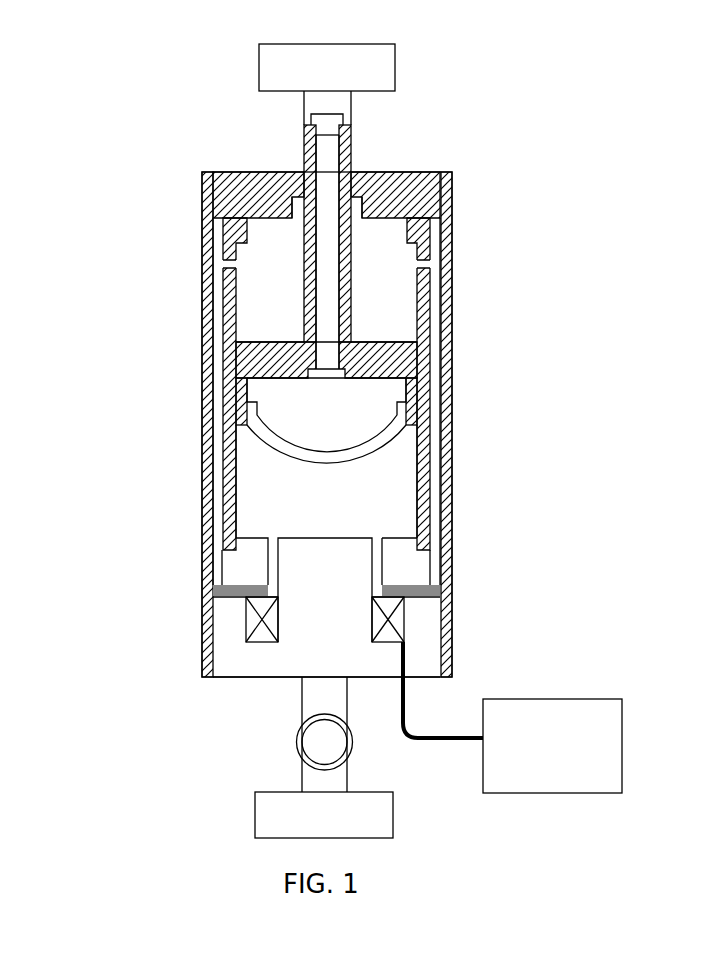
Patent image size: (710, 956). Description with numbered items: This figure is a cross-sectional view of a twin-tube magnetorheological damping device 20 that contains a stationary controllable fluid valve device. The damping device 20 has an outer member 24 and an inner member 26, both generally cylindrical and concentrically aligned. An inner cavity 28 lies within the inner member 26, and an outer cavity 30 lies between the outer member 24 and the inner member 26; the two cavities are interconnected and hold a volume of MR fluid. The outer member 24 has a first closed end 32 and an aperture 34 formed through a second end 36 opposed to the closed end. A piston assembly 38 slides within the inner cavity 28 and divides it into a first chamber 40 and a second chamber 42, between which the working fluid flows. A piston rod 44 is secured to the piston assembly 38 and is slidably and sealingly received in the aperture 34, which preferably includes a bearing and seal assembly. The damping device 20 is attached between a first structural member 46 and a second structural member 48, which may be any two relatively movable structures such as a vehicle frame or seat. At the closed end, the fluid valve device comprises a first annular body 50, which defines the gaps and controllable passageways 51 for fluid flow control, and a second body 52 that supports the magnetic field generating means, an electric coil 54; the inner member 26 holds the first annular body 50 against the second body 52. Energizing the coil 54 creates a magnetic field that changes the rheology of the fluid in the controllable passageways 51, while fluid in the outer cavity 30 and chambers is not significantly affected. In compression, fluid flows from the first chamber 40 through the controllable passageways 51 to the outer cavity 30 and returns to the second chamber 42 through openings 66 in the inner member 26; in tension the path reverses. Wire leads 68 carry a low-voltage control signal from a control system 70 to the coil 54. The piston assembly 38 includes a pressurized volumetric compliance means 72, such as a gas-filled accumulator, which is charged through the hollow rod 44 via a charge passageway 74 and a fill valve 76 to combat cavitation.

The damping device 20 is at (80, 145).
The outer member 24 is at (452, 205).
The inner member 26 is at (422, 503).
The inner cavity 28 is at (400, 318).
The outer cavity 30 is at (435, 447).
The first closed end 32 is at (252, 677).
The aperture 34 is at (296, 166).
The second end 36 is at (223, 171).
The piston assembly 38 is at (418, 360).
The first chamber 40 is at (282, 508).
The second chamber 42 is at (283, 328).
The piston rod 44 is at (346, 148).
The first structural member 46 is at (255, 815).
The second structural member 48 is at (259, 72).
The first annular body 50 is at (257, 576).
The controllable passageways 51 is at (440, 592).
The second body 52 is at (337, 623).
The electric coil 54 is at (252, 620).
The openings 66 is at (425, 262).
The wire leads 68 is at (457, 742).
The control system 70 is at (622, 745).
The pressurized volumetric compliance means 72 is at (338, 430).
The charge passageway 74 is at (337, 168).
The fill valve 76 is at (343, 118).